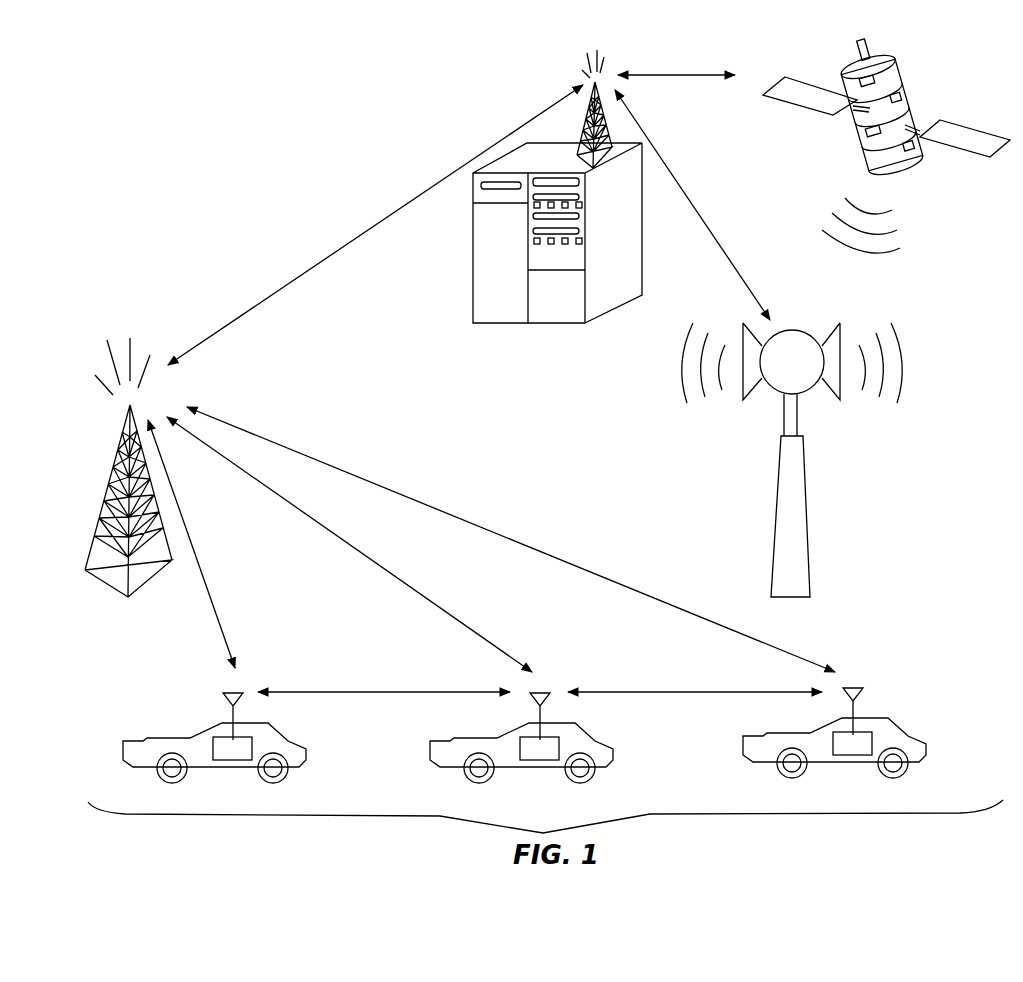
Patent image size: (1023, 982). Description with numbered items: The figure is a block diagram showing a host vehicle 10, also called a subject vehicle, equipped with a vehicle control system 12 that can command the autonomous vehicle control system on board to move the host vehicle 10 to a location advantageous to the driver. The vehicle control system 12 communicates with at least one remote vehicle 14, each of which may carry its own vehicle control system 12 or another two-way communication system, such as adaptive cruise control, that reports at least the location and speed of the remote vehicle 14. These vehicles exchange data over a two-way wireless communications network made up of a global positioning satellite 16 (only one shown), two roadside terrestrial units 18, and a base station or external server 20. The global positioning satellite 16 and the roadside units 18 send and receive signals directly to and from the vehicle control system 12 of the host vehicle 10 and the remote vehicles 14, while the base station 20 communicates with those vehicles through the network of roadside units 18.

The host vehicle 10 is at (474, 738).
The vehicle control system 12 is at (235, 760).
The remote vehicle 14 is at (203, 736).
The global positioning satellite 16 is at (863, 58).
The roadside unit 18 is at (97, 597).
The base station 20 is at (473, 263).